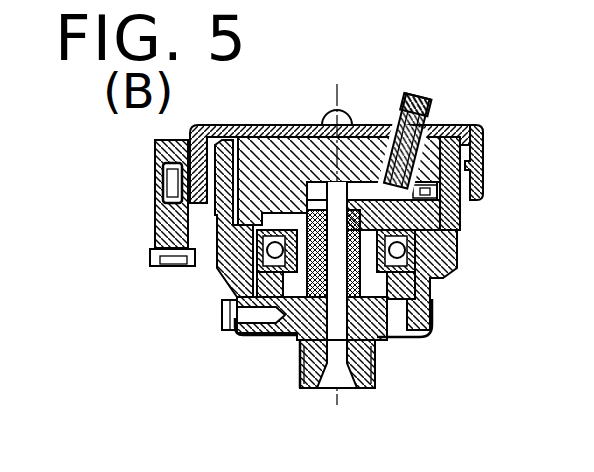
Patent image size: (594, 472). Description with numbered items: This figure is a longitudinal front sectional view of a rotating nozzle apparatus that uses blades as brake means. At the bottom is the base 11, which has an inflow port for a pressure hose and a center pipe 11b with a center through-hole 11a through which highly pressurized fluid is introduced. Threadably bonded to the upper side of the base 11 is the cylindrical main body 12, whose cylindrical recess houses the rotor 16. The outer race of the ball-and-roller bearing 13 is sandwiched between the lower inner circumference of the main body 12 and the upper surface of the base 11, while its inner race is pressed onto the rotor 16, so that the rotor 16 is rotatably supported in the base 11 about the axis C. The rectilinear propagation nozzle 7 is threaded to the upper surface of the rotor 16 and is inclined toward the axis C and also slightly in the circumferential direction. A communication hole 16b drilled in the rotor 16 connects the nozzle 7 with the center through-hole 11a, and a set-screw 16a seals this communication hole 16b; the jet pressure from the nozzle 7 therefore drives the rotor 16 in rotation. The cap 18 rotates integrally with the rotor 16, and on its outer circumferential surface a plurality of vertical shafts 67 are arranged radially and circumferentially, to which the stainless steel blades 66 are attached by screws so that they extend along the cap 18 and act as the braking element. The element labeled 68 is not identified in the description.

The axis C is at (336, 230).
The rectilinear propagation nozzle 7 is at (435, 118).
The base 11 is at (372, 354).
The center through-hole 11a is at (298, 378).
The center pipe 11b is at (297, 339).
The cylindrical main body 12 is at (445, 245).
The ball-and-roller bearing 13 is at (440, 278).
The rotor 16 is at (280, 163).
The set-screw 16a is at (461, 205).
The communication hole 16b is at (365, 192).
The cap 18 is at (484, 158).
The blade 66 is at (198, 272).
The vertical shaft 67 is at (165, 152).
The terminal 68 is at (150, 257).